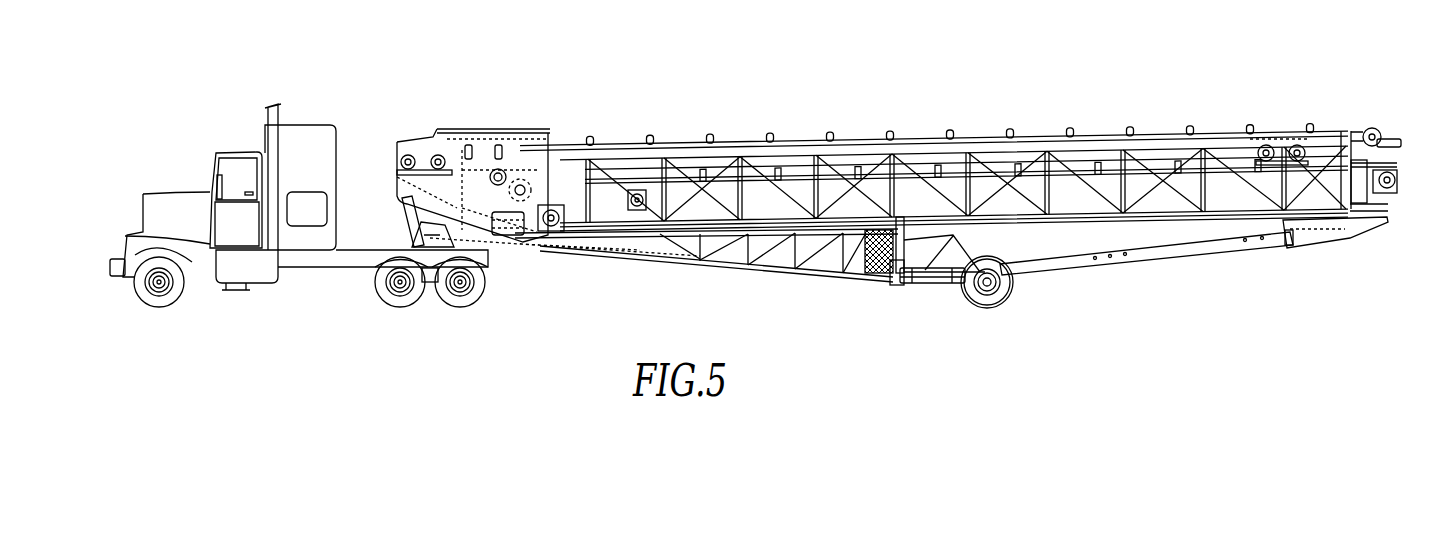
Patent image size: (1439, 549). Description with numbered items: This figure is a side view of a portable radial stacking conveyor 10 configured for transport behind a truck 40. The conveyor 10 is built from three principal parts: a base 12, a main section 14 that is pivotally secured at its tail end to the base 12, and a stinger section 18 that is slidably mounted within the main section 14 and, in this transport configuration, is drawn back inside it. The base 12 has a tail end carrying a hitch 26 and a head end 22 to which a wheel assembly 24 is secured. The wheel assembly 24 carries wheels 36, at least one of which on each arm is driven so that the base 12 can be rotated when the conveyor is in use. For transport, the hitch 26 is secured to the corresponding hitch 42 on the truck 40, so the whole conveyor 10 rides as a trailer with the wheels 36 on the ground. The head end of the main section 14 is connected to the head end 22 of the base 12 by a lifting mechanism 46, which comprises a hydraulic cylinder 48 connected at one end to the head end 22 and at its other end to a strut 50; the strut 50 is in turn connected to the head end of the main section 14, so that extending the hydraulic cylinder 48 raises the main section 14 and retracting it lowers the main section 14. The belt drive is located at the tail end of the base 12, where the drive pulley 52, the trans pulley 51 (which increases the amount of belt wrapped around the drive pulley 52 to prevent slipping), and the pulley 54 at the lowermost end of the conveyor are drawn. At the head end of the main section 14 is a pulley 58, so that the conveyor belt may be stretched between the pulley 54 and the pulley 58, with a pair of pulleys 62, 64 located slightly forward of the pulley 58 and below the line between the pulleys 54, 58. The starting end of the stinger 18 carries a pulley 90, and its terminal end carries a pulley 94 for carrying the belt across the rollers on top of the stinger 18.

The conveyor 10 is at (892, 156).
The base 12 is at (700, 253).
The main section 14 is at (1034, 133).
The stinger section 18 is at (584, 172).
The head end 22 is at (853, 268).
The wheel assembly 24 is at (938, 310).
The hitch 26 is at (402, 207).
The wheel 36 is at (1006, 299).
The truck 40 is at (178, 195).
The hitch 42 is at (414, 230).
The lifting mechanism 46 is at (1194, 275).
The hydraulic cylinder 48 is at (925, 286).
The strut 50 is at (1136, 258).
The trans pulley 51 is at (505, 169).
The drive pulley 52 is at (532, 182).
The pulley 54 is at (445, 150).
The pulley 58 is at (1372, 128).
The pulley 62 is at (1264, 144).
The pulley 64 is at (1294, 145).
The pulley 90 is at (635, 208).
The pulley 94 is at (1394, 174).